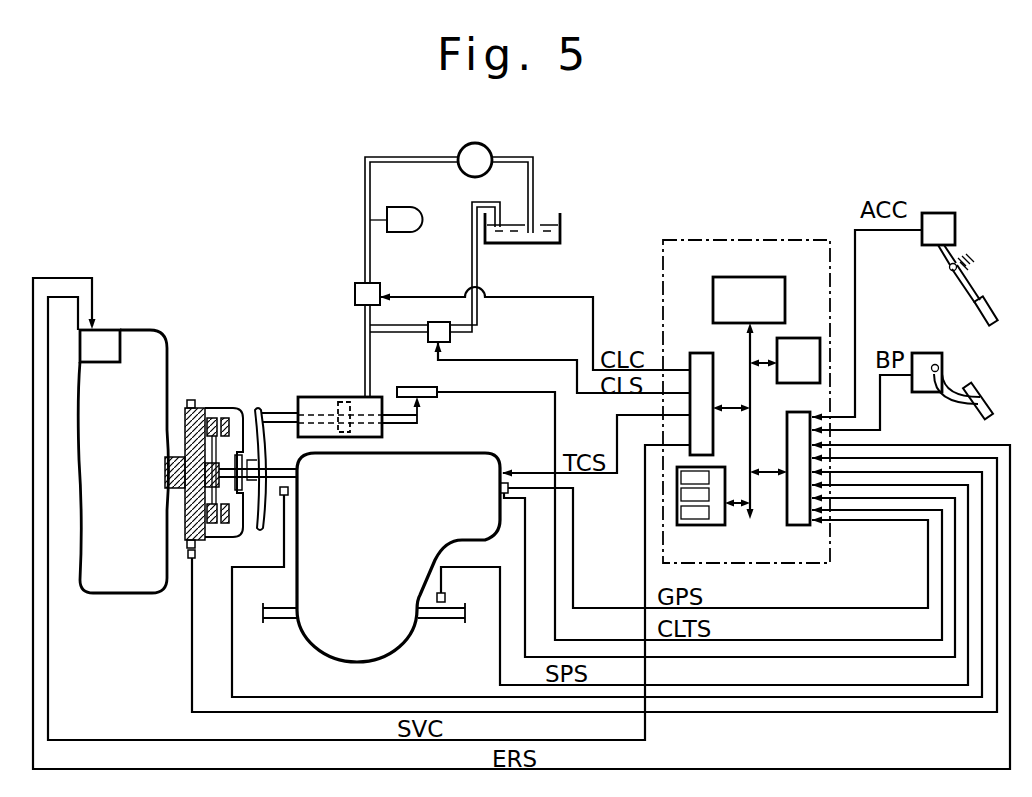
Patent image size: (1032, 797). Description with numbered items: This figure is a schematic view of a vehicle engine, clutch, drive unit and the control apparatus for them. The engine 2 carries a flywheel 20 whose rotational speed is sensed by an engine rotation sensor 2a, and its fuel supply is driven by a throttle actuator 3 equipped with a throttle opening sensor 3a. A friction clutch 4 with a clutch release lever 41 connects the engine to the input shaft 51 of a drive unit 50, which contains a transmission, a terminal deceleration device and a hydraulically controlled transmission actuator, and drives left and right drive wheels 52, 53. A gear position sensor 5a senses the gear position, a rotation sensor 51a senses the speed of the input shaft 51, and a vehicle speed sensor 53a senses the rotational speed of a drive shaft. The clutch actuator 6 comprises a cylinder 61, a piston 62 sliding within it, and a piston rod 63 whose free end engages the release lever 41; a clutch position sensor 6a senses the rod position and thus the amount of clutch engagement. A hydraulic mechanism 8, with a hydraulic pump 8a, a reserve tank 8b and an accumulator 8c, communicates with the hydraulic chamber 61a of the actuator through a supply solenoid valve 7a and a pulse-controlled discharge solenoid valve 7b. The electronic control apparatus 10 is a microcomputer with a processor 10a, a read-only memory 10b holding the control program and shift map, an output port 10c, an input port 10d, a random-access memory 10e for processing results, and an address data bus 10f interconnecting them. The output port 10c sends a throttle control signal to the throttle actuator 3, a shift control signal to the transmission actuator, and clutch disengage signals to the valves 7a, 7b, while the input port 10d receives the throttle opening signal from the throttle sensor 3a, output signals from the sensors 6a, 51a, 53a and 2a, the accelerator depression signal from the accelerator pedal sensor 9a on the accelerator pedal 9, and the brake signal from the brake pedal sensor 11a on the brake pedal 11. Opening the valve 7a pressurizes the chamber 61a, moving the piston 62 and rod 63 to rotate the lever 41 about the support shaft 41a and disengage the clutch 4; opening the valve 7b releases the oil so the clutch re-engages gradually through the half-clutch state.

The engine 2 is at (142, 333).
The engine rotation sensor 2a is at (188, 562).
The throttle actuator 3 is at (103, 330).
The throttle opening sensor 3a is at (88, 367).
The clutch 4 is at (211, 462).
The flywheel 20 is at (186, 403).
The clutch release lever 41 is at (253, 408).
The support shaft 41a is at (253, 528).
The drive unit 50 is at (470, 460).
The gear position sensor 5a is at (509, 489).
The input shaft 51 is at (282, 472).
The rotation sensor 51a is at (282, 496).
The left drive wheel 52 is at (286, 620).
The right drive wheel 53 is at (448, 620).
The vehicle speed sensor 53a is at (446, 598).
The clutch actuator 6 is at (340, 376).
The clutch position sensor 6a is at (410, 387).
The cylinder 61 is at (307, 396).
The hydraulic chamber 61a is at (385, 432).
The piston 62 is at (343, 400).
The piston rod 63 is at (262, 408).
The supply solenoid valve 7a is at (355, 292).
The discharge solenoid valve 7b is at (430, 327).
The hydraulic mechanism 8 is at (492, 252).
The hydraulic pump 8a is at (476, 144).
The reserve tank 8b is at (562, 230).
The accumulator 8c is at (398, 210).
The accelerator pedal 9 is at (988, 300).
The accelerator pedal sensor 9a is at (940, 220).
The electronic control apparatus 10 is at (748, 370).
The processor 10a is at (748, 283).
The read-only memory (ROM) 10b is at (800, 342).
The output port 10c is at (700, 357).
The input port 10d is at (796, 525).
The random-access memory (RAM) 10e is at (693, 525).
The address data bus (BUS) 10f is at (754, 506).
The brake pedal 11 is at (986, 396).
The brake pedal sensor 11a is at (928, 352).